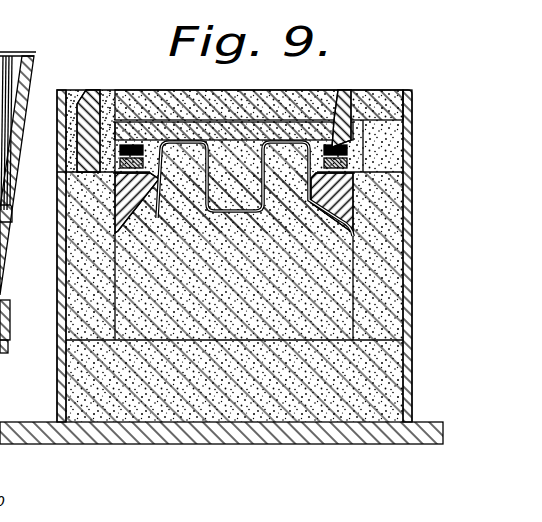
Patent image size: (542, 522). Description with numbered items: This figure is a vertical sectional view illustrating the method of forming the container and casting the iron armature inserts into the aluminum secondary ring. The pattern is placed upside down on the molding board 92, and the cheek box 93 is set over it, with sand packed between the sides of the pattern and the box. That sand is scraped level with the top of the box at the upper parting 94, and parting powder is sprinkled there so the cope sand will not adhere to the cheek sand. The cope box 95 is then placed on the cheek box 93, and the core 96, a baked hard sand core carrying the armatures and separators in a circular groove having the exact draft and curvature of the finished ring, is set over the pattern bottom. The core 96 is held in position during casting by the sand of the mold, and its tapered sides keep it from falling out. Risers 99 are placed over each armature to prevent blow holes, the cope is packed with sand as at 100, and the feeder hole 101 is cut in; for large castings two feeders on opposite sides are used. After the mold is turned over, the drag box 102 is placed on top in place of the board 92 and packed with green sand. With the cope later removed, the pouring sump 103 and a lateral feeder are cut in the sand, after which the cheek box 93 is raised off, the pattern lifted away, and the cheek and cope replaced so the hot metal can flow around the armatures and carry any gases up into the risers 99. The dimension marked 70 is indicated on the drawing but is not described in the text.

The molding board 92 is at (35, 444).
The cheek box 93 is at (66, 285).
The upper parting 94 is at (98, 186).
The cope box 95 is at (66, 137).
The core 96 is at (186, 90).
The risers 99 is at (340, 110).
The cope sand 100 is at (295, 97).
The feeder hole 101 is at (78, 90).
The drag box 102 is at (58, 383).
The pouring sump 103 is at (70, 222).
The thickness dimension 70 is at (110, 67).